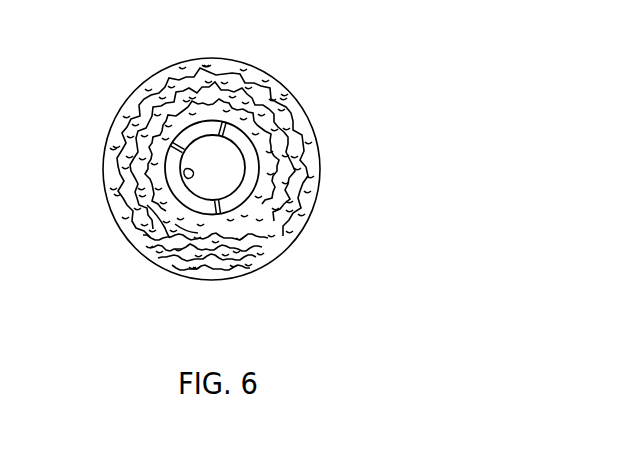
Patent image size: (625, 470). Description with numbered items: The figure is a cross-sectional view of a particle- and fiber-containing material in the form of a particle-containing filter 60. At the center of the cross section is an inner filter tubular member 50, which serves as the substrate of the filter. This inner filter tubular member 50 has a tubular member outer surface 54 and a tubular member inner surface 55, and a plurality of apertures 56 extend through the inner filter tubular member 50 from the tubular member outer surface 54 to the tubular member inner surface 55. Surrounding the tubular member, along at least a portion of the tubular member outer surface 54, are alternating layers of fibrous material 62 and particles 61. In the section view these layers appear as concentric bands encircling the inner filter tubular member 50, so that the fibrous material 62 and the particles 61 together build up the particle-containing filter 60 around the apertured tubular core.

The particle-containing filter 60 is at (449, 57).
The inner filter tubular member 50 is at (258, 152).
The tubular member outer surface 54 is at (255, 188).
The tubular member inner surface 55 is at (192, 177).
The apertures 56 is at (175, 224).
The particles 61 is at (256, 262).
The fibrous material 62 is at (279, 252).